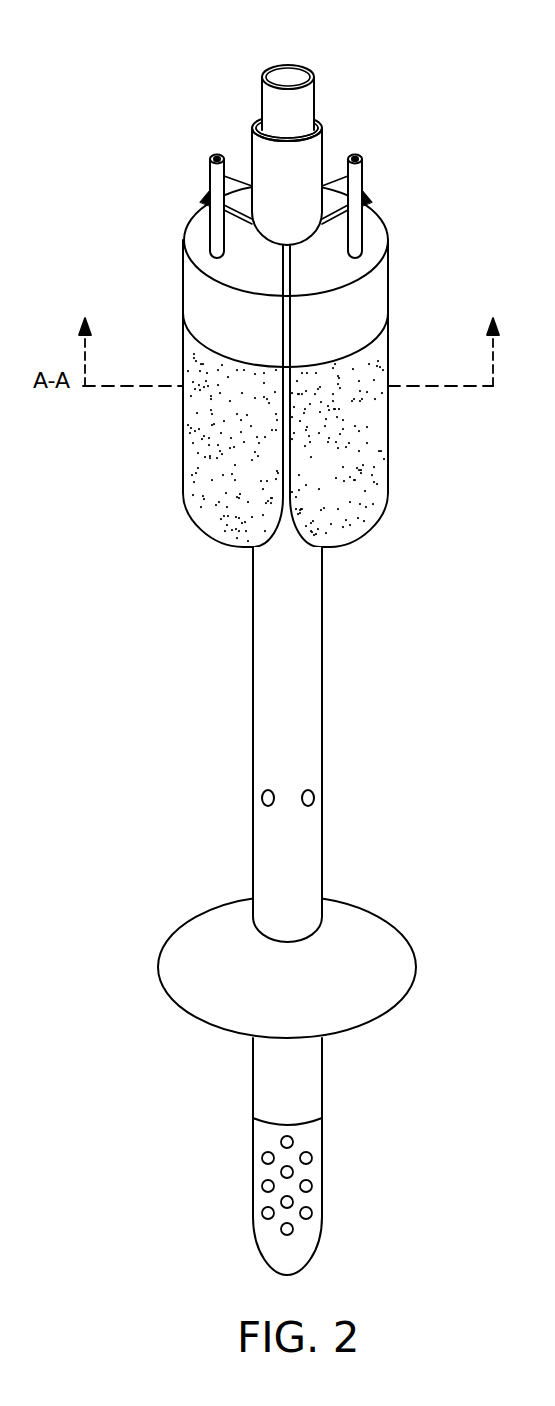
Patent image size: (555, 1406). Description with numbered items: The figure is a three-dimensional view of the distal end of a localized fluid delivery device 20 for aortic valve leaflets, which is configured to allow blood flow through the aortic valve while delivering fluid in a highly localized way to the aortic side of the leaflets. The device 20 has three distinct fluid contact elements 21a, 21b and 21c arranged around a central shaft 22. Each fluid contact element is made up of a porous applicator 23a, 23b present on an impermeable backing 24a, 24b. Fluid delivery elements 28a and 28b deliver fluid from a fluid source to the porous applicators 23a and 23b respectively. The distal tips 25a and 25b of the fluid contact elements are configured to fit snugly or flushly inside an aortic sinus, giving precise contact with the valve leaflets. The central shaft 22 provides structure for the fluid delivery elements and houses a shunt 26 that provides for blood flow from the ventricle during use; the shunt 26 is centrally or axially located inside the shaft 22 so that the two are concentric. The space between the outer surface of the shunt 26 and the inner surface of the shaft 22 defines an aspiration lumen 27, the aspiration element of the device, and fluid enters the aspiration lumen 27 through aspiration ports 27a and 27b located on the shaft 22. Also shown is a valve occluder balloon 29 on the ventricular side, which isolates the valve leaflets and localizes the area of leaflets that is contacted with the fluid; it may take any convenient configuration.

The localized fluid delivery device 20 is at (152, 124).
The fluid contact element 21a is at (341, 279).
The fluid contact element 21b is at (273, 279).
The fluid contact element 21c is at (334, 198).
The central shaft 22 is at (303, 679).
The porous applicator 23a is at (360, 479).
The porous applicator 23b is at (253, 479).
The impermeable backing 24a is at (353, 307).
The impermeable backing 24b is at (225, 310).
The distal tip 25a is at (350, 536).
The distal tip 25b is at (220, 534).
The shunt 26 is at (283, 76).
The aspiration lumen 27 is at (321, 115).
The aspiration port 27a is at (314, 797).
The aspiration port 27b is at (262, 798).
The fluid delivery element 28a is at (363, 172).
The fluid delivery element 28b is at (208, 187).
The valve occluder balloon 29 is at (385, 953).